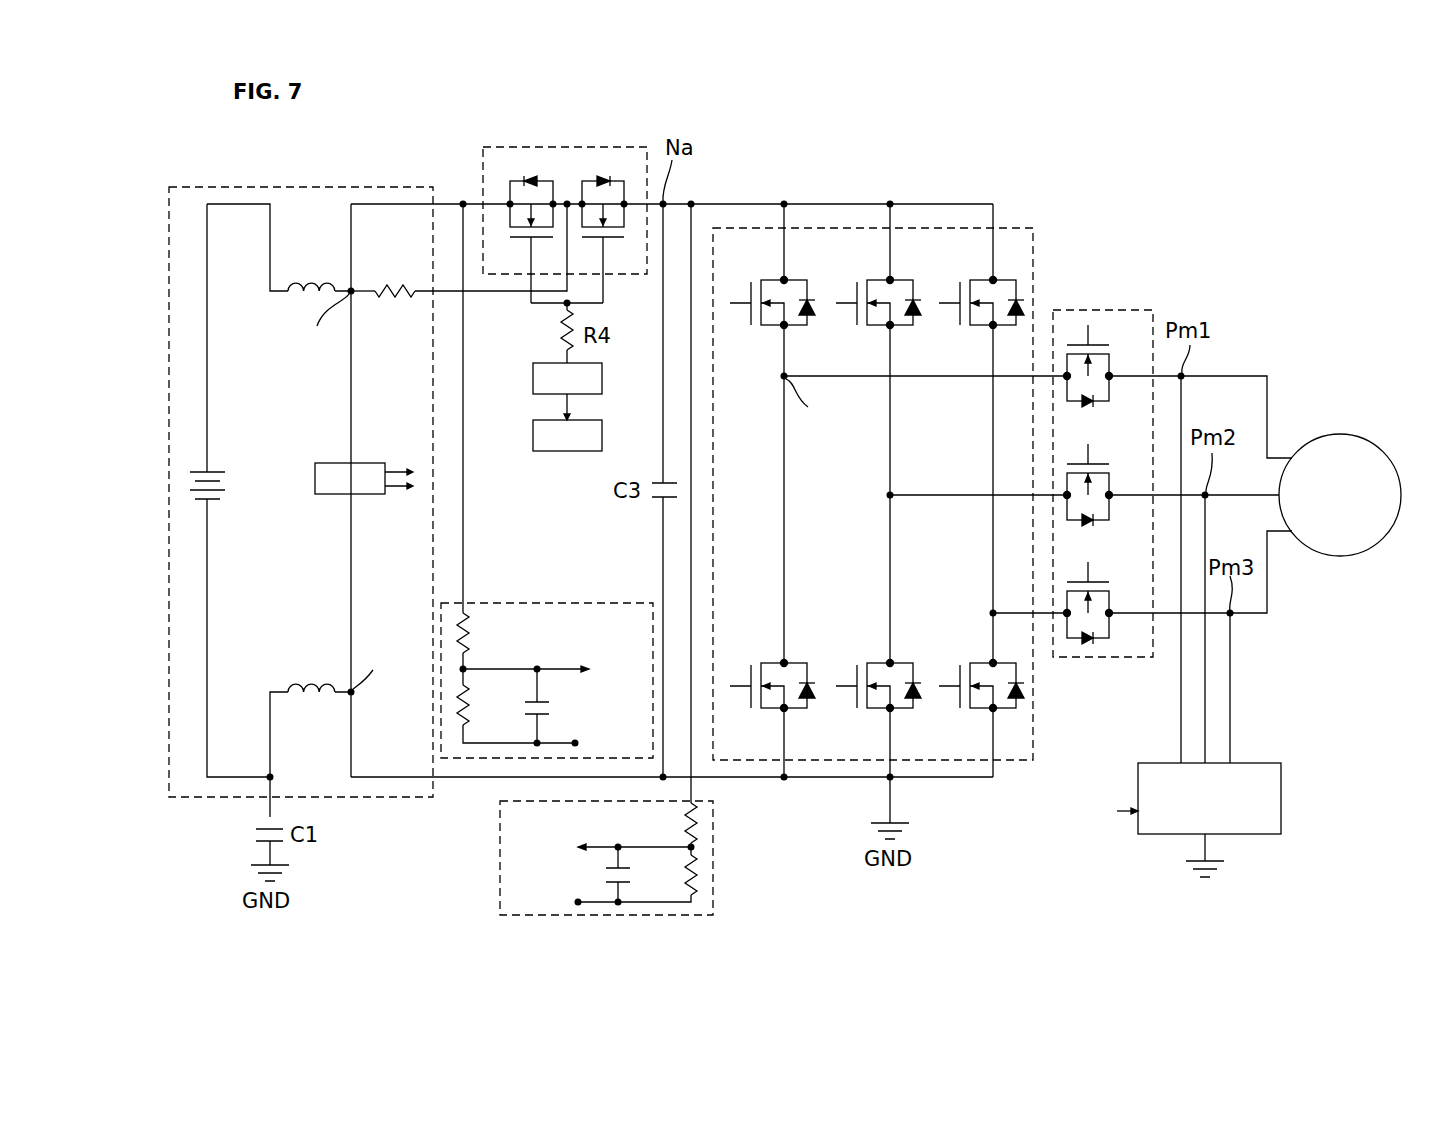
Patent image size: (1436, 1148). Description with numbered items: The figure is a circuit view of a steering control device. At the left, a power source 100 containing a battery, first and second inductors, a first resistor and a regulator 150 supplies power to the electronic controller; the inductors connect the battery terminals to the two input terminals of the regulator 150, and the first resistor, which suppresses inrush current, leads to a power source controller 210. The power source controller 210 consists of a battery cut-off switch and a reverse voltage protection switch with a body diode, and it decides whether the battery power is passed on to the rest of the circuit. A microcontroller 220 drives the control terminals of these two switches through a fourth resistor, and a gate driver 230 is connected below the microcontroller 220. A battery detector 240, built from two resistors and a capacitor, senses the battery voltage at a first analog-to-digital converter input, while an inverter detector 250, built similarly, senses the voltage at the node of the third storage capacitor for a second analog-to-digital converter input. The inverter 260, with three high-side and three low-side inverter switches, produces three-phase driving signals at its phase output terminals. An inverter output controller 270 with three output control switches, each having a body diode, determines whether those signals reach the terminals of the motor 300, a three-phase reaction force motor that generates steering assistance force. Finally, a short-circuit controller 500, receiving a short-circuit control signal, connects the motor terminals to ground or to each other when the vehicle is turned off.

The power source 100 is at (213, 187).
The regulator 150 is at (326, 497).
The power source controller 210 is at (483, 170).
The microcontroller 220 is at (533, 379).
The gate driver 230 is at (533, 434).
The battery detector 240 is at (543, 603).
The inverter detector 250 is at (714, 847).
The inverter 260 is at (1028, 228).
The inverter output controller 270 is at (1093, 310).
The motor 300 is at (1336, 557).
The short-circuit controller 500 is at (1282, 812).